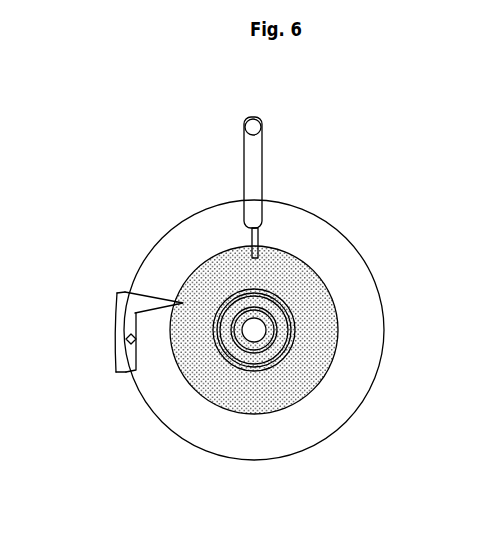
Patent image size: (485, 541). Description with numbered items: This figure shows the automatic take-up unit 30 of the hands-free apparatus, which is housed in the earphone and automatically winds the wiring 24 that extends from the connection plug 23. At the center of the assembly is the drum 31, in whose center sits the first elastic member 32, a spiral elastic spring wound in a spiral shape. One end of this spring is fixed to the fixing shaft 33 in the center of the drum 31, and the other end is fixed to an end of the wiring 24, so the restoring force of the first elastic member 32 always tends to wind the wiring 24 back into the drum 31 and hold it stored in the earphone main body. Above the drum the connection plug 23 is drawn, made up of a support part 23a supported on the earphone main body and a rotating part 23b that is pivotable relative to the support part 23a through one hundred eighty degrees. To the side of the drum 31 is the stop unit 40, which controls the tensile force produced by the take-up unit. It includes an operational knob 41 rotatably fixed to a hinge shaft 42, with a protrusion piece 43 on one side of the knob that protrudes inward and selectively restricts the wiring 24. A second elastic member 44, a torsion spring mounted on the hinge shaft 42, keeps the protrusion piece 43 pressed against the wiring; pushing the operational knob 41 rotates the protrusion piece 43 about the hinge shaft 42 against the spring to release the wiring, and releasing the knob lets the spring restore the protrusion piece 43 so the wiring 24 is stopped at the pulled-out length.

The connection plug 23 is at (253, 154).
The support part 23a is at (262, 161).
The rotating part 23b is at (246, 118).
The wiring 24 is at (246, 244).
The automatic take-up unit 30 is at (346, 328).
The drum 31 is at (334, 285).
The first elastic member 32 is at (318, 384).
The fixing shaft 33 is at (225, 405).
The stop unit 40 is at (115, 328).
The operational knob 41 is at (117, 303).
The hinge shaft 42 is at (116, 357).
The protrusion piece 43 is at (170, 299).
The second elastic member 44 is at (126, 337).